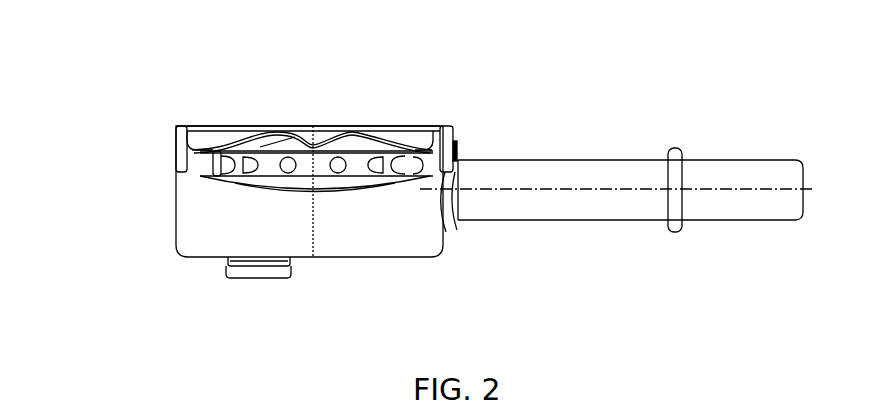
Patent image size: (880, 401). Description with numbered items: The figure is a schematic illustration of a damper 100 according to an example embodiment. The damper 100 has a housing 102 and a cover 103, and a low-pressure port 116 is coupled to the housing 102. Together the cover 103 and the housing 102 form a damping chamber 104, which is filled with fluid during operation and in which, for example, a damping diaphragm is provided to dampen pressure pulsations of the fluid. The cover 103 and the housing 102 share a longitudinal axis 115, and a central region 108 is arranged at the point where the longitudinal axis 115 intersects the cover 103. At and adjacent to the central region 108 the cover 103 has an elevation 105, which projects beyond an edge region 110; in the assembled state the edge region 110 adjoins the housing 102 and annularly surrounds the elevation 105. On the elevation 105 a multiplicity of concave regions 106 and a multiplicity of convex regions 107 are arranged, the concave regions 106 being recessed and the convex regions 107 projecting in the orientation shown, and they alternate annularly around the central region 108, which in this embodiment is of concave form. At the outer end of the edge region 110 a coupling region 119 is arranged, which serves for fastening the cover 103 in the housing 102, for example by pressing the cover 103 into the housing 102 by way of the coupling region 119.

The damper 100 is at (429, 184).
The housing 102 is at (455, 132).
The cover 103 is at (452, 130).
The damping chamber 104 is at (220, 155).
The elevation 105 is at (278, 124).
The concave regions 106 is at (377, 125).
The convex regions 107 is at (237, 124).
The central region 108 is at (313, 124).
The edge region 110 is at (205, 143).
The longitudinal axis 115 is at (317, 243).
The low-pressure port 116 is at (737, 160).
The coupling region 119 is at (190, 140).